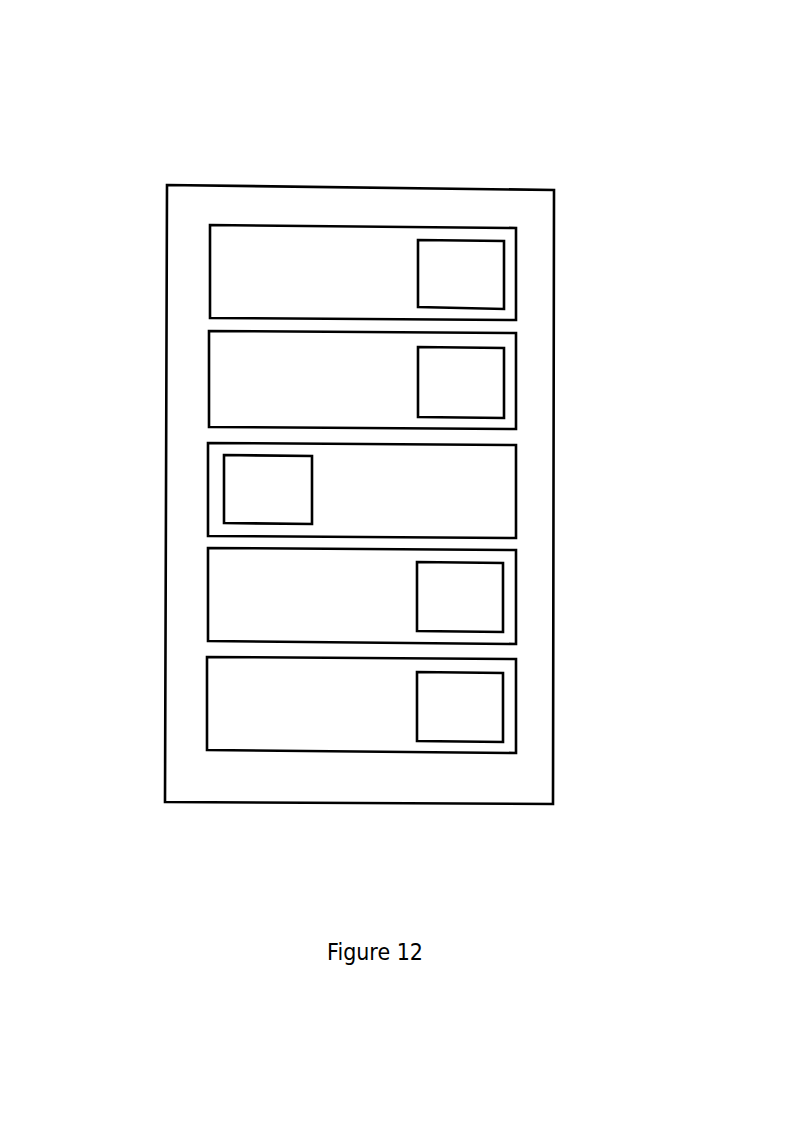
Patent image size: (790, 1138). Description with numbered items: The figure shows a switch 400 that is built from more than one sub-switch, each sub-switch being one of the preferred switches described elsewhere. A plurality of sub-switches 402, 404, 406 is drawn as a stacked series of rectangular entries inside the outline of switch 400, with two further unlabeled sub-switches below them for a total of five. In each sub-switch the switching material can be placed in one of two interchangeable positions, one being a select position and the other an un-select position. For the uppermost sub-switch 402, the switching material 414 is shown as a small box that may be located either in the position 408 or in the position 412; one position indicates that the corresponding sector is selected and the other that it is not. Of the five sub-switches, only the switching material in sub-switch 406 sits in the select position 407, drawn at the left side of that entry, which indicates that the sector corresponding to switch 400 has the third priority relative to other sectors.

The switch 400 is at (345, 183).
The sub-switch 402 is at (383, 195).
The sub-switch 404 is at (522, 383).
The sub-switch 406 is at (365, 517).
The select position 407 is at (250, 526).
The position 408 is at (553, 196).
The position 412 is at (237, 252).
The switching material 414 is at (468, 288).